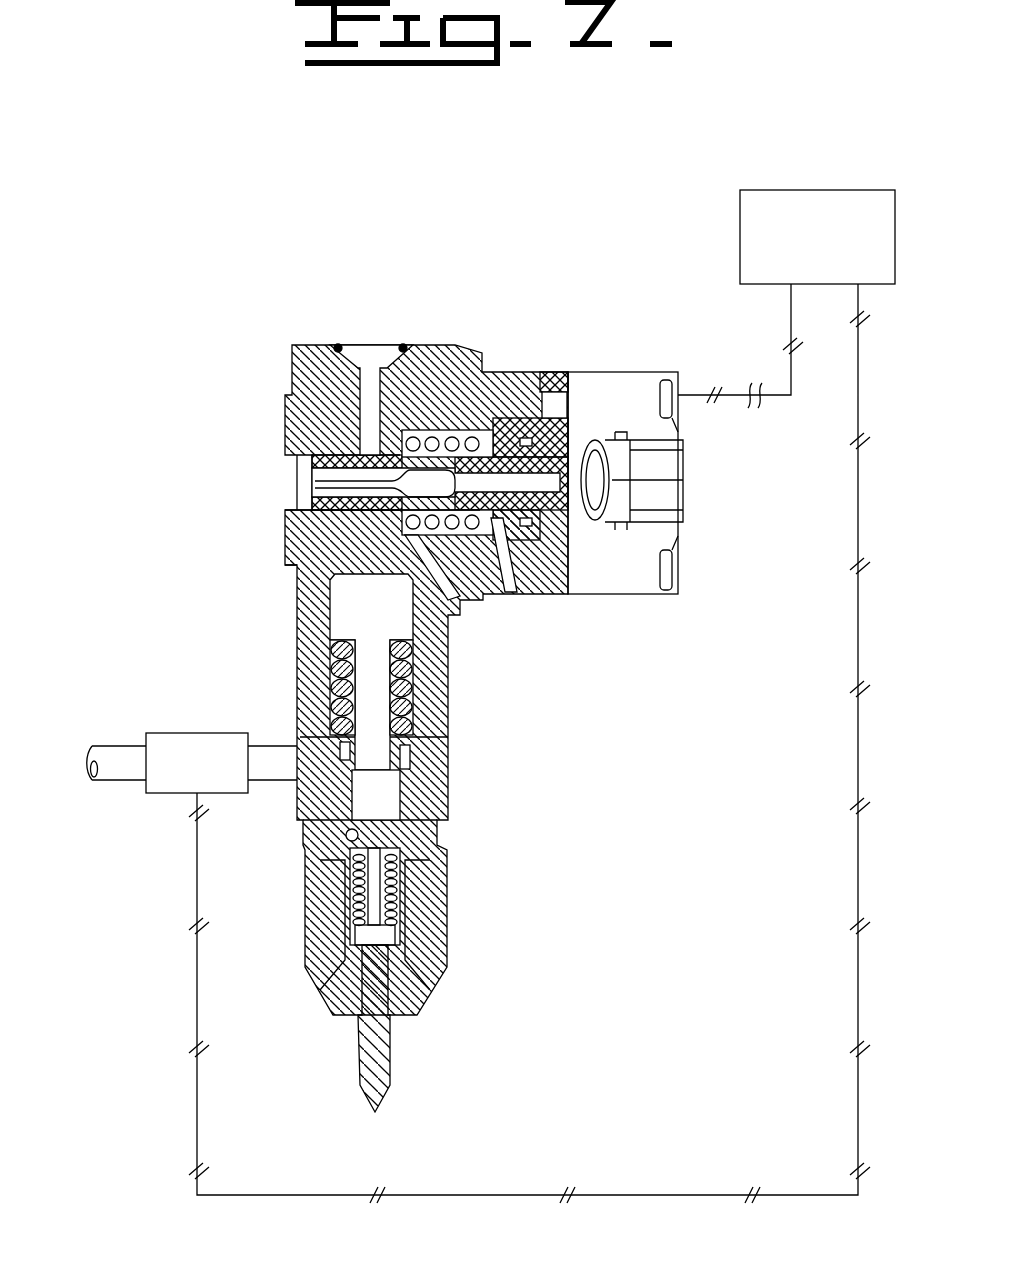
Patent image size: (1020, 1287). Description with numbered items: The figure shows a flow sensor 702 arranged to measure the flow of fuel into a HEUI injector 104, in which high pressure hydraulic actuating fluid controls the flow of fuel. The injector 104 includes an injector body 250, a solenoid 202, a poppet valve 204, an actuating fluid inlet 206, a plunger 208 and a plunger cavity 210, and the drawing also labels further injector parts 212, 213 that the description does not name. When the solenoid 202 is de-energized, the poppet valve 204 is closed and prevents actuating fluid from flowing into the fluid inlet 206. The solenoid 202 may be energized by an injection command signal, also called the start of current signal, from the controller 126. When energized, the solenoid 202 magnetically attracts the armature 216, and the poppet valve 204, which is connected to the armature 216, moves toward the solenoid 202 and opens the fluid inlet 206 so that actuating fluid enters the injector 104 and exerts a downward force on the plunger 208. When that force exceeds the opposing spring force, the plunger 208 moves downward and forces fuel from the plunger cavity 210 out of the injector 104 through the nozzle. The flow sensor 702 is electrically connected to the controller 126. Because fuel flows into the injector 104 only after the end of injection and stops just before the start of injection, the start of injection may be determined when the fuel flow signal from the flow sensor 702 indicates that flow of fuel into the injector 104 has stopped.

The HEUI injector 104 is at (291, 288).
The controller 126 is at (833, 190).
The solenoid 202 is at (622, 580).
The poppet valve 204 is at (392, 481).
The actuating fluid inlet 206 is at (513, 582).
The plunger 208 is at (358, 612).
The plunger cavity 210 is at (385, 799).
The injector body 212 is at (332, 565).
The return spring 213 is at (337, 692).
The armature 216 is at (586, 438).
The injector body 250 is at (130, 809).
The flow sensor 702 is at (218, 781).